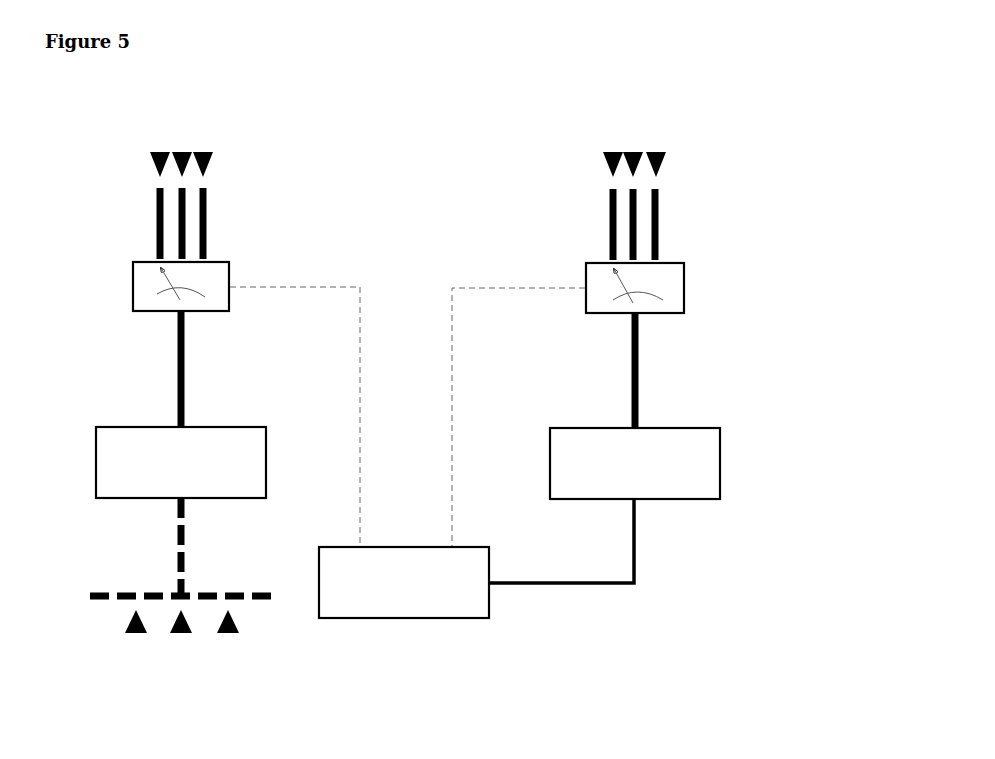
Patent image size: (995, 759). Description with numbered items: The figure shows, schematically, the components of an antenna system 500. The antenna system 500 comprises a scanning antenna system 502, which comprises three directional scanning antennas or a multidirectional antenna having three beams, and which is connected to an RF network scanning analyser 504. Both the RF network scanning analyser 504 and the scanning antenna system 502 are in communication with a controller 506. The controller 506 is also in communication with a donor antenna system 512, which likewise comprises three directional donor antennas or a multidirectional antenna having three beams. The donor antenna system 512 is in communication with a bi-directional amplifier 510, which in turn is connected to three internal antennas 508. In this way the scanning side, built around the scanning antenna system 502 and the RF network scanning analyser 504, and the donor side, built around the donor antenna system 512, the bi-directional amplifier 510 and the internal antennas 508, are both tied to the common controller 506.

The antenna system 500 is at (416, 138).
The scanning antenna system 502 is at (694, 162).
The RF network scanning analyser 504 is at (722, 467).
The controller 506 is at (403, 621).
The internal antennas 508 is at (123, 654).
The bi-directional amplifier 510 is at (110, 424).
The donor antenna system 512 is at (145, 170).